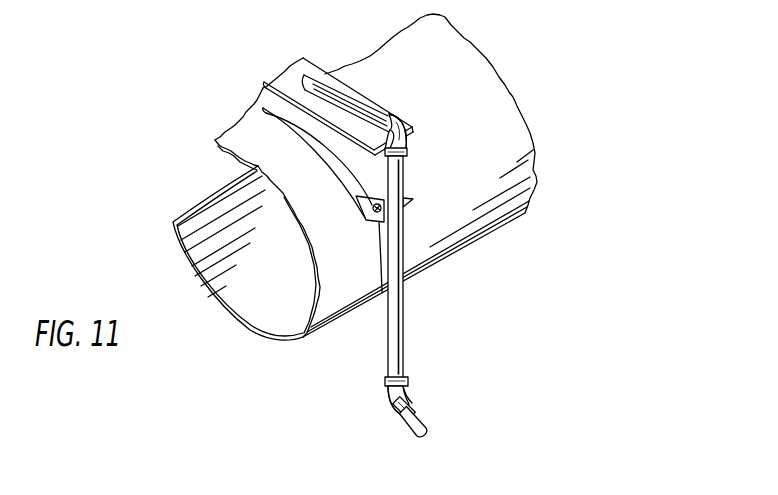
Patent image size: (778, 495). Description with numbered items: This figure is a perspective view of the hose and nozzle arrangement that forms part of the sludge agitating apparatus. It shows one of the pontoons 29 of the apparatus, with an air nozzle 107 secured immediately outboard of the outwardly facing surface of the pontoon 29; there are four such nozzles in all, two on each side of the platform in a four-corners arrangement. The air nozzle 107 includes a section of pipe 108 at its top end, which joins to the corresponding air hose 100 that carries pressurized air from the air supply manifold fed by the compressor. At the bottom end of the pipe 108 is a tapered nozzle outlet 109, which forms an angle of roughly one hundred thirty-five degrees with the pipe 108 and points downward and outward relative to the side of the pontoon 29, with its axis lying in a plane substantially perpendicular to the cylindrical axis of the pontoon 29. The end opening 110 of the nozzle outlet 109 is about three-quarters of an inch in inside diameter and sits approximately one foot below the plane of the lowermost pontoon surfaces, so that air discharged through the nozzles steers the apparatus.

The pontoon 29 is at (503, 211).
The hose 100 is at (352, 103).
The air nozzle 107 is at (346, 373).
The pipe 108 is at (400, 322).
The tapered nozzle outlet 109 is at (415, 411).
The end opening 110 is at (426, 436).